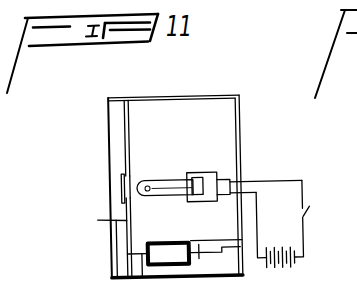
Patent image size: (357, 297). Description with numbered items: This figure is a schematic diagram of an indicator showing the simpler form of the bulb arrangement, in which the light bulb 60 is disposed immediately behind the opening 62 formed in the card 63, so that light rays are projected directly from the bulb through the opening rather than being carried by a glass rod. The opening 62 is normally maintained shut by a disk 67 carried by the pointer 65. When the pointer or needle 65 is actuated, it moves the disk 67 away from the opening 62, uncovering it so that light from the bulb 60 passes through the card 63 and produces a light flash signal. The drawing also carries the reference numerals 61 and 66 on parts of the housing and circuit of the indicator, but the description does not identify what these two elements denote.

The bulb 60 is at (167, 180).
The housing 61 is at (185, 96).
The opening 62 is at (130, 180).
The card 63 is at (130, 140).
The pointer 65 is at (103, 244).
The battery 66 is at (296, 264).
The disk 67 is at (121, 178).